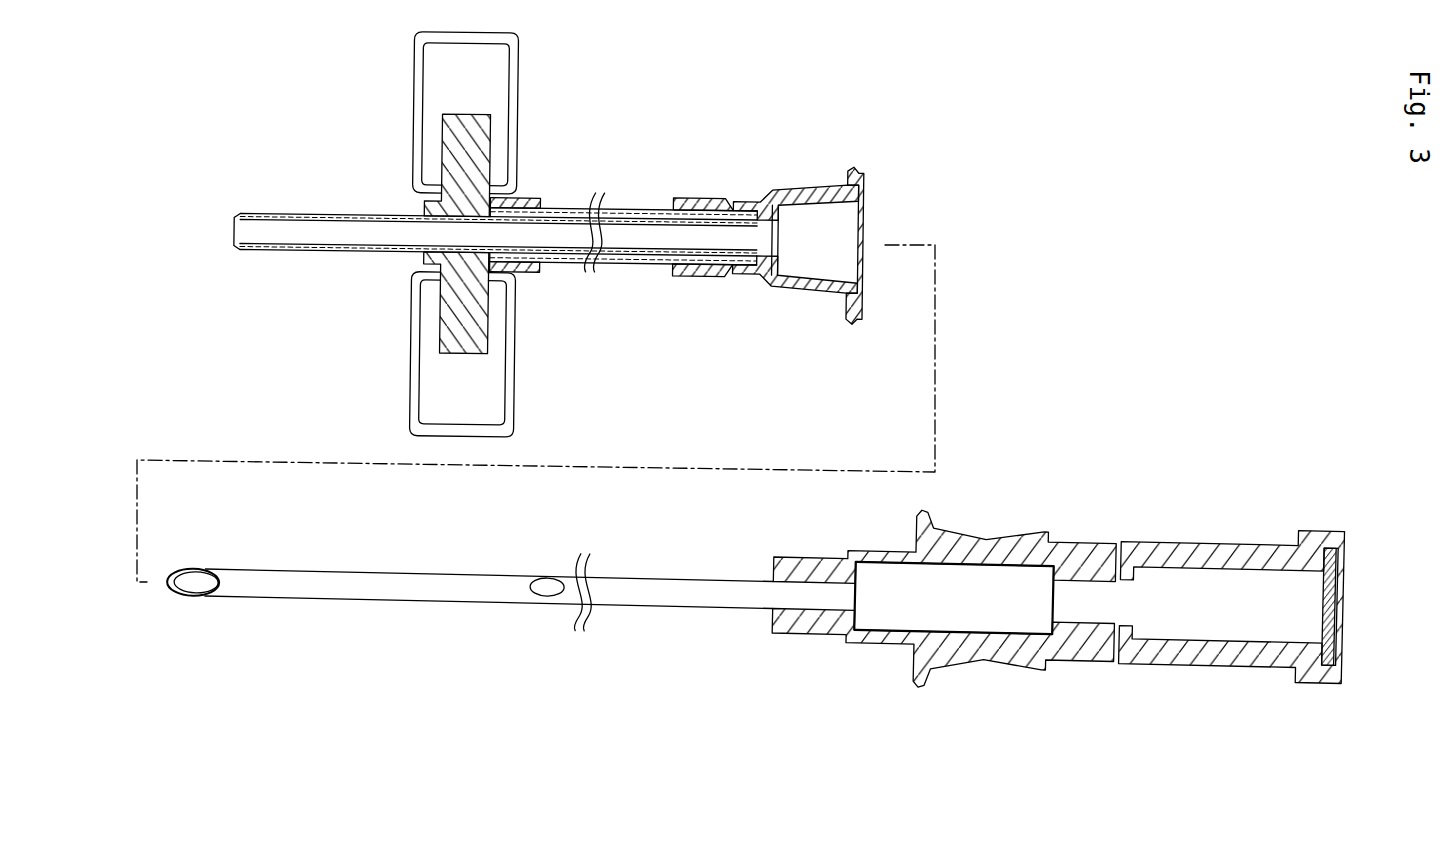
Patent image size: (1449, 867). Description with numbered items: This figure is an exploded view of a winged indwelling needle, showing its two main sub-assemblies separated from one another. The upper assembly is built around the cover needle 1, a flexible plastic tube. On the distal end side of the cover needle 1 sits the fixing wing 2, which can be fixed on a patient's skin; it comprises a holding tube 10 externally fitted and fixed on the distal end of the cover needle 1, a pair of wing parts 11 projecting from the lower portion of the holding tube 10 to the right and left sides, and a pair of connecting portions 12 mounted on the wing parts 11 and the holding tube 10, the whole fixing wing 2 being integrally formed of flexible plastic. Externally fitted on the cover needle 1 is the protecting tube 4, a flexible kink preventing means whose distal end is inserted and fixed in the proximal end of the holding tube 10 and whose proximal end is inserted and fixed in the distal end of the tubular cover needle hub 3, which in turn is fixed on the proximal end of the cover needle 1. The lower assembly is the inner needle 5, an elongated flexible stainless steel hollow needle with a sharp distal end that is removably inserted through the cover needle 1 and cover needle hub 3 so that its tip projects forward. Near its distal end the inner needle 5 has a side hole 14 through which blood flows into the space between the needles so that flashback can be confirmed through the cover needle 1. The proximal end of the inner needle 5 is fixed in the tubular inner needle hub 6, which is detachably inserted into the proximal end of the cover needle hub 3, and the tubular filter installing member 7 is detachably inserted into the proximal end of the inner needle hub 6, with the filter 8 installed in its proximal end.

The cover needle 1 is at (283, 210).
The fixing wing 2 is at (471, 234).
The cover needle hub 3 is at (792, 186).
The protecting tube 4 is at (632, 207).
The inner needle 5 is at (311, 603).
The inner needle hub 6 is at (968, 536).
The filter installing member 7 is at (1205, 541).
The filter 8 is at (1323, 592).
The holding tube 10 is at (533, 198).
The wing parts 11 is at (413, 103).
The connecting portions 12 is at (440, 140).
The side hole 14 is at (557, 601).